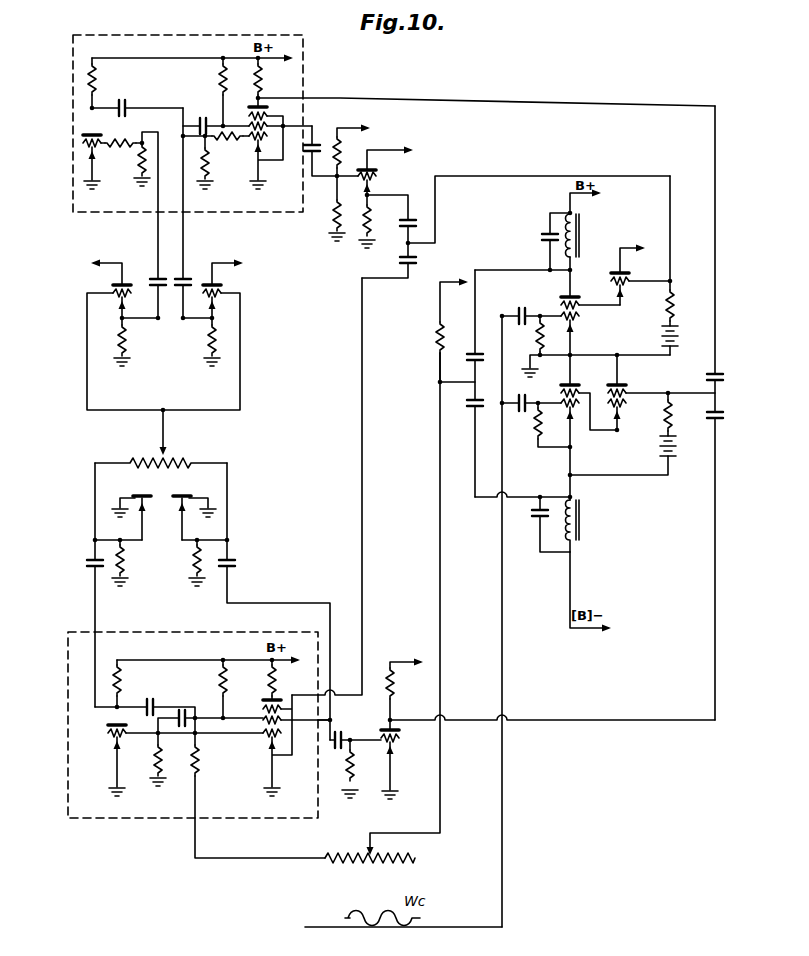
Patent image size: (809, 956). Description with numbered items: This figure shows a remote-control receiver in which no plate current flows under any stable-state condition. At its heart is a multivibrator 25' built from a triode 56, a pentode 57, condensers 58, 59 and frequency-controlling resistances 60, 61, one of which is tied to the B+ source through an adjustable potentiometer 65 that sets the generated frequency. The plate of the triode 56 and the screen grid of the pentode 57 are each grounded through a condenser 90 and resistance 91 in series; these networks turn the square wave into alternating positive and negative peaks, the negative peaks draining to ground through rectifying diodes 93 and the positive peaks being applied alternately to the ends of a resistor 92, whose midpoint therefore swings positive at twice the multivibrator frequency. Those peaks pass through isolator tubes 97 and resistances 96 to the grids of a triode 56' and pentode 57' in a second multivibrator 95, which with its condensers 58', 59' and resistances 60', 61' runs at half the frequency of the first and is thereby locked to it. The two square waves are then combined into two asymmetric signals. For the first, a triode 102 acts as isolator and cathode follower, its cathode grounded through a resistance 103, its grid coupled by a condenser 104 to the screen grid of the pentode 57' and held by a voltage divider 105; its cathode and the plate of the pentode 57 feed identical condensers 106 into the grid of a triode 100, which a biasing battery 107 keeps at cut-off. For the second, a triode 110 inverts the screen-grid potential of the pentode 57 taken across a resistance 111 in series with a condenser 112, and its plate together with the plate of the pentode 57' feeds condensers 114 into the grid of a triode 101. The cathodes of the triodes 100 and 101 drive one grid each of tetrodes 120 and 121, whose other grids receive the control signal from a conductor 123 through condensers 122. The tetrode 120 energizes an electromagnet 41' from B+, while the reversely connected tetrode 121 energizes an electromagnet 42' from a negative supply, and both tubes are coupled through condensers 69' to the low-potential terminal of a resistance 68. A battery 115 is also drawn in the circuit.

The multivibrator 95 is at (73, 208).
The condenser 59' is at (137, 92).
The condenser 58' is at (212, 108).
The pentode 57' is at (280, 148).
The triode 56' is at (69, 162).
The resistance 96 is at (172, 150).
The resistance 60' is at (127, 173).
The resistance 61' is at (218, 169).
The isolator tube 97 is at (112, 297).
The resistor 92 is at (188, 458).
The rectifying diode 93 is at (133, 497).
The resistance 91 is at (127, 561).
The condenser 90 is at (88, 572).
The multivibrator 25' is at (193, 751).
The condenser 59 is at (145, 703).
The condenser 58 is at (190, 736).
The triode 56 is at (118, 760).
The frequency-controlling resistance 60 is at (141, 759).
The frequency-controlling resistance 61 is at (258, 795).
The pentode 57 is at (280, 745).
The condenser 112 is at (336, 737).
The resistance 111 is at (360, 784).
The triode 110 is at (398, 746).
The adjustable potentiometer 65 is at (370, 866).
The conductor 123 is at (502, 849).
The condenser 104 is at (314, 131).
The voltage divider 105 is at (352, 149).
The triode 102 is at (378, 179).
The resistance 103 is at (376, 229).
The condenser 106 is at (412, 218).
The resistance 68 is at (432, 337).
The condenser 69' is at (486, 383).
The electromagnet 41' is at (542, 237).
The tetrode 120 is at (566, 304).
The triode 100 is at (618, 288).
The biasing battery 107 is at (676, 341).
The condenser 122 is at (518, 313).
The tetrode 121 is at (575, 421).
The triode 101 is at (622, 392).
The resistor and battery 115 is at (672, 462).
The electromagnet 42' is at (549, 542).
The condenser 114 is at (722, 378).